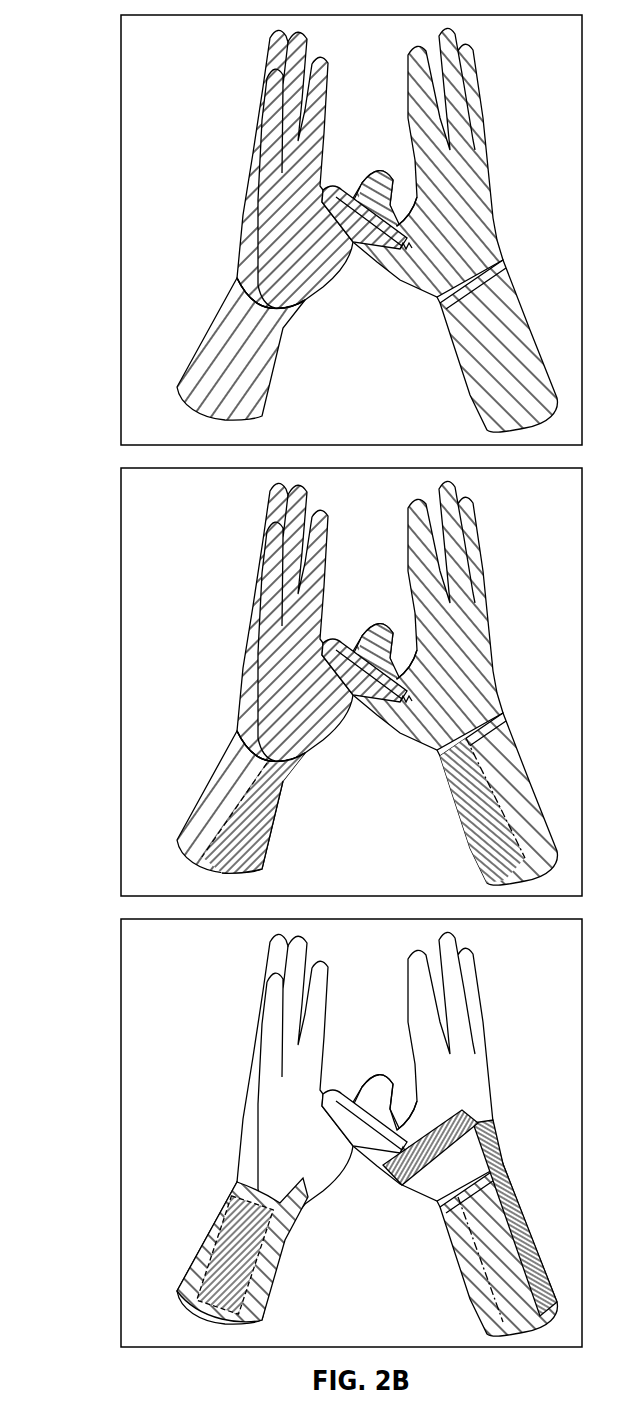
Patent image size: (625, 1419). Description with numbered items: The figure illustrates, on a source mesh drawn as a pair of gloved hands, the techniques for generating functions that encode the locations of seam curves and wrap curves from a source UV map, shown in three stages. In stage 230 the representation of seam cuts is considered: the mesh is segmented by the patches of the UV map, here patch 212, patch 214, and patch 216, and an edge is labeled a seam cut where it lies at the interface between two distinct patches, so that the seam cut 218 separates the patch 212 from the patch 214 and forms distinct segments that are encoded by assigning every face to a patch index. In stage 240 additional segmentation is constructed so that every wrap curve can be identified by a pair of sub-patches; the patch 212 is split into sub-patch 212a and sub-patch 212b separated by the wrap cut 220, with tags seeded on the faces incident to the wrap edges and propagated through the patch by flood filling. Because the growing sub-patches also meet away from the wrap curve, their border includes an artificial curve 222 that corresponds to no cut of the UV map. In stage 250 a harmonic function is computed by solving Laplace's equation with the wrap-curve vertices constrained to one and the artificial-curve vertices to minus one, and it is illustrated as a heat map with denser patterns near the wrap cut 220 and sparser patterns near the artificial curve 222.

The stage 230 is at (122, 202).
The stage 240 is at (122, 660).
The stage 250 is at (122, 1115).
The patch 212 is at (226, 318).
The sub-patch 212a is at (224, 771).
The sub-patch 212b is at (252, 837).
The patch 214 is at (298, 164).
The patch 216 is at (253, 192).
The seam cut 218 is at (300, 328).
The wrap cut 220 is at (223, 813).
The artificial curve 222 is at (458, 791).